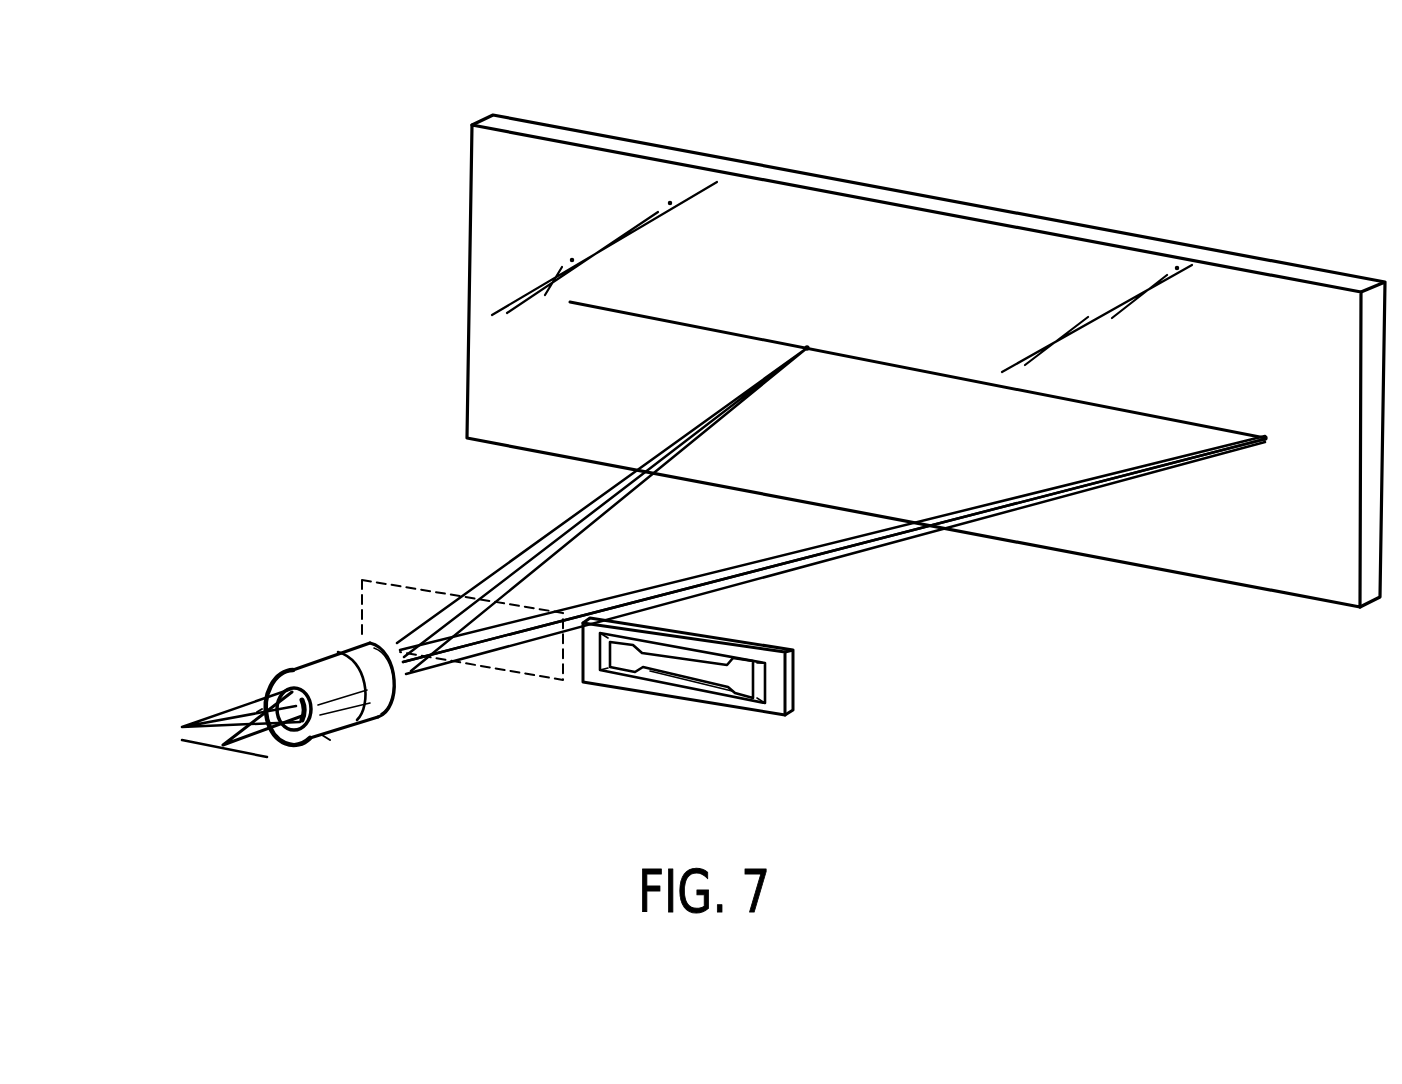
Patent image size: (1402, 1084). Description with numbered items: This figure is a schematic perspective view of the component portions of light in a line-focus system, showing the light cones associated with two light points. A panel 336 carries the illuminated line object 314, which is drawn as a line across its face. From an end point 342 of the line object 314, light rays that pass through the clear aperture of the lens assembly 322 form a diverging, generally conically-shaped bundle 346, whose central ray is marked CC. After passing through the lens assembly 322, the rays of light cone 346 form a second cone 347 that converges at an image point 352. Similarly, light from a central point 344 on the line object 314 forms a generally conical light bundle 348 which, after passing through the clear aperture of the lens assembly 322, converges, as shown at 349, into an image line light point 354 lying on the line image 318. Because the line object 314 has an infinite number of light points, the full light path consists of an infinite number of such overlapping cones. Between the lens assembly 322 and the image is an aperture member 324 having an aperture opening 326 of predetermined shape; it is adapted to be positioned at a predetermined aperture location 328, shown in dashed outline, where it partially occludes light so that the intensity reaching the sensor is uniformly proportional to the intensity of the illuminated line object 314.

The display panel 336 is at (566, 212).
The illuminated line object 314 is at (595, 308).
The reflection point 344 is at (807, 348).
The end point 342 is at (1265, 438).
The conical light bundle 348 is at (570, 527).
The light cone 346 is at (923, 535).
The central ray CC is at (837, 562).
The lens assembly 322 is at (340, 647).
The converging light 349 is at (327, 740).
The aperture location 328 is at (388, 580).
The aperture member 324 is at (797, 665).
The aperture opening 326 is at (752, 678).
The image point 352 is at (182, 727).
The second cone 347 is at (257, 712).
The image line light point 354 is at (223, 745).
The line image 318 is at (265, 760).